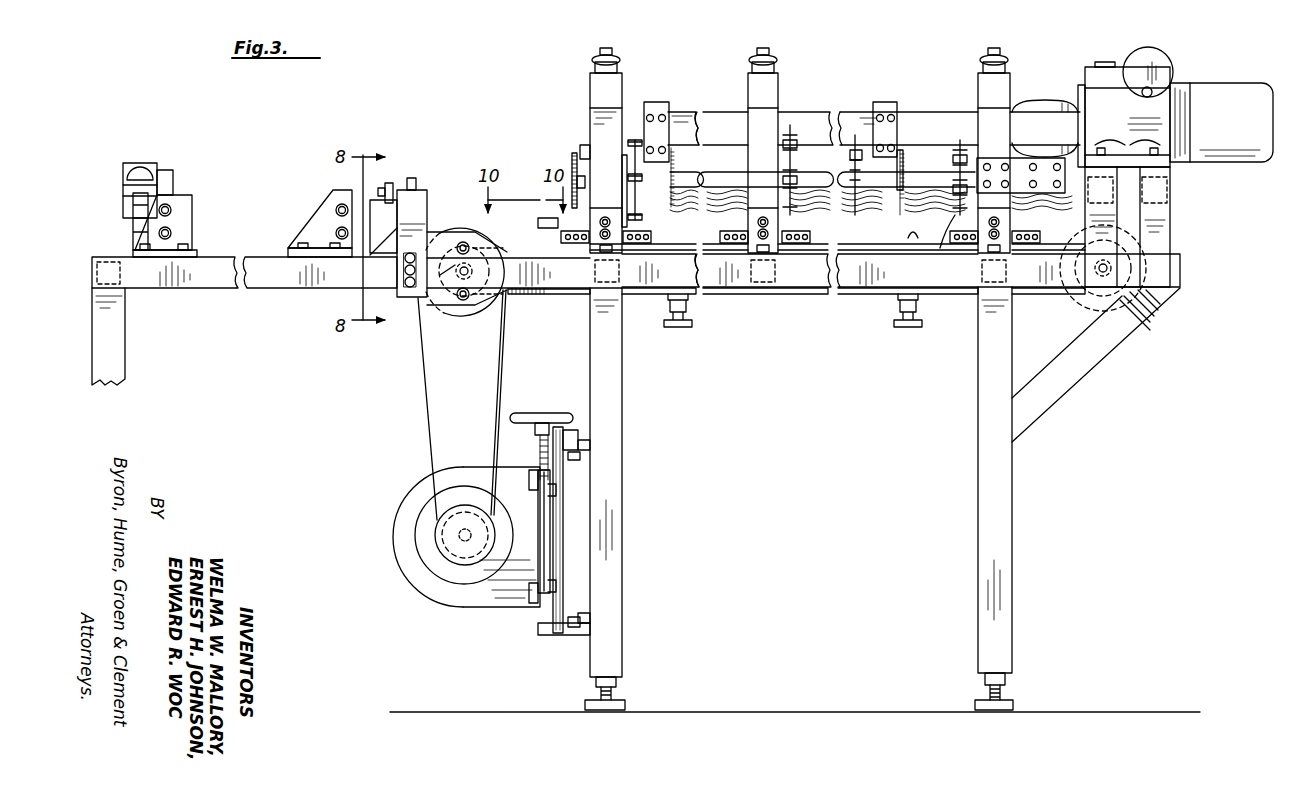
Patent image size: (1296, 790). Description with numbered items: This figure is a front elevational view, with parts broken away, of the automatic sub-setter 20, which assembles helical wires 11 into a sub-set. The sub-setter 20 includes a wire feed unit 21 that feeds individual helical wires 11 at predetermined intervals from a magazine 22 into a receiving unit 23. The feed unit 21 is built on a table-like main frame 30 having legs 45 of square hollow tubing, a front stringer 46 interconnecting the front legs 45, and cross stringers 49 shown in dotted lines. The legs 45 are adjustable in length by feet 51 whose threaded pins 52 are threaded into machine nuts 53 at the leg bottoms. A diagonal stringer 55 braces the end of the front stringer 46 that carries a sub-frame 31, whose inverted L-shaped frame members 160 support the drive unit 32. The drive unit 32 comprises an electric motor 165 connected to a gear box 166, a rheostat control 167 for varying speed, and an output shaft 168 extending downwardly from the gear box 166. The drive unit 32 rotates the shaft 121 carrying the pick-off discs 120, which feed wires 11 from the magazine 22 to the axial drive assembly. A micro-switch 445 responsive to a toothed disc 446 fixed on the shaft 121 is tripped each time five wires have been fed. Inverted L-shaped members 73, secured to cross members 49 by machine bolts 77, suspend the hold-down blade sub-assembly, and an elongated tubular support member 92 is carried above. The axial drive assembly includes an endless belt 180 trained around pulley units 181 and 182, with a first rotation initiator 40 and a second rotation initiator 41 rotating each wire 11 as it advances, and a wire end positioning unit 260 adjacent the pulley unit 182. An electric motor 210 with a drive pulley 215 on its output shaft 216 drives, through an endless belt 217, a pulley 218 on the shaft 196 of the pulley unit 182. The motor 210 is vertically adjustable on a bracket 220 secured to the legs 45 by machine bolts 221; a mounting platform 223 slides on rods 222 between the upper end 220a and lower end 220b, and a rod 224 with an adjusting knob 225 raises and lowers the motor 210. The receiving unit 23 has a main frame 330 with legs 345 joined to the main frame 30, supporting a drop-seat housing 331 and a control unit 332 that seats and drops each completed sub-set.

The main frame 330 is at (163, 300).
The legs 345 is at (125, 365).
The control unit 332 is at (162, 165).
The drop-seat housing 331 is at (262, 230).
The receiving unit 23 is at (382, 186).
The wire end positioning unit 260 is at (407, 318).
The pulley 218 is at (465, 230).
The shaft 196 is at (447, 300).
The pulley unit 182 is at (483, 325).
The helical wires 11 is at (864, 250).
The automatic sub-setter 20 is at (840, 312).
The main frame 30 is at (1014, 515).
The sub-frame 31 is at (1184, 243).
The wire feed unit 21 is at (890, 88).
The second rotation initiator 41 is at (538, 224).
The inverted L-shaped members 73 is at (590, 108).
The micro-switch 445 is at (582, 145).
The disc 446 is at (576, 158).
The elongated tubular support member 92 is at (815, 115).
The rotatable shaft 121 is at (727, 170).
The pick-off discs 120 is at (672, 155).
The magazine 22 is at (852, 180).
The machine bolts 77 is at (775, 250).
The front stringer 46 is at (728, 284).
The cross stringers 49 is at (572, 305).
The first rotation initiator 40 is at (940, 248).
The endless belt 180 is at (952, 252).
The inverted L-shaped frame members 160 is at (1115, 226).
The electric motor 165 is at (1105, 80).
The output shaft 168 is at (1068, 140).
The rheostat control 167 is at (1152, 58).
The gear box 166 is at (1048, 112).
The drive unit 32 is at (1192, 83).
The diagonal stringer 55 is at (1056, 392).
The pulley unit 181 is at (1082, 296).
The legs 45 is at (624, 340).
The machine nuts 53 is at (616, 683).
The threaded pins 52 is at (600, 692).
The feet 51 is at (622, 708).
The bracket 220 is at (578, 515).
The adjusting knob 225 is at (537, 412).
The mounting platform 223 is at (540, 468).
The upper end 220a is at (566, 437).
The machine bolts 221 is at (578, 455).
The rod 224 is at (540, 570).
The rods 222 is at (560, 532).
The lower end 220b is at (552, 638).
The electric motor 210 is at (412, 588).
The drive pulley 215 is at (435, 547).
The output shaft 216 is at (438, 535).
The endless belt 217 is at (428, 440).